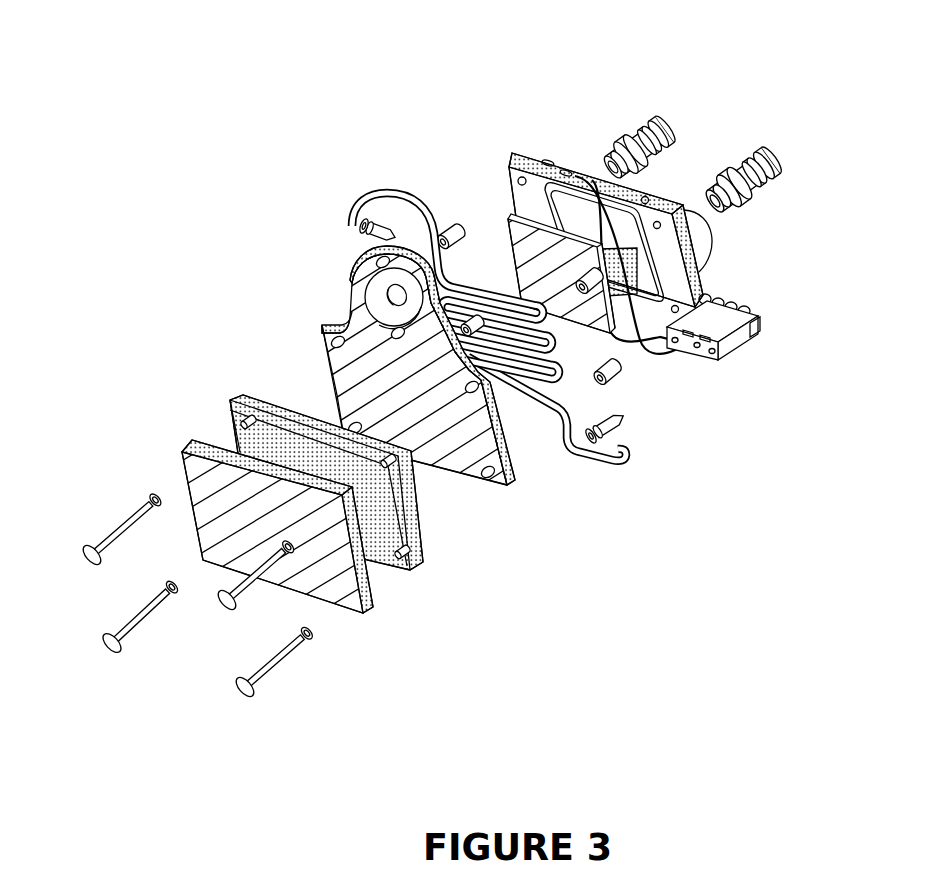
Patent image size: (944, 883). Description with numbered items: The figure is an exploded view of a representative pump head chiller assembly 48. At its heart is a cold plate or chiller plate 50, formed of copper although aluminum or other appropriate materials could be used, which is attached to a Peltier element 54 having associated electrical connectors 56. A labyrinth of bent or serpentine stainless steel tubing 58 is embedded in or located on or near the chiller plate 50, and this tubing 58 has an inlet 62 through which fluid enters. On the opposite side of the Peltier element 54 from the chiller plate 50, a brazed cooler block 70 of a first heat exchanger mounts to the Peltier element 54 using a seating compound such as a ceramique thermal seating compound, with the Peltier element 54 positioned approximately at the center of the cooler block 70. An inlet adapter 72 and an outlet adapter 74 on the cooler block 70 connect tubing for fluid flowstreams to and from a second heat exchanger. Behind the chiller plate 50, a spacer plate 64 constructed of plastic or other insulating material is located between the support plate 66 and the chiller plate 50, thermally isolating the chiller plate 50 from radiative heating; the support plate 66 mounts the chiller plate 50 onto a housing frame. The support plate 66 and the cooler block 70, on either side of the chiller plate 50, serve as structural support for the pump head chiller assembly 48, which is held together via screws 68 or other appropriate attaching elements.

The pump head chiller assembly 48 is at (141, 86).
The chiller plate 50 is at (325, 322).
The Peltier element 54 is at (508, 215).
The electrical connectors 56 is at (713, 355).
The tubing 58 is at (527, 388).
The inlet 62 is at (628, 427).
The spacer plate 64 is at (423, 567).
The support plate 66 is at (372, 612).
The screws 68 is at (175, 597).
The cooler block 70 is at (703, 237).
The inlet adapter 72 is at (698, 195).
The outlet adapter 74 is at (666, 110).